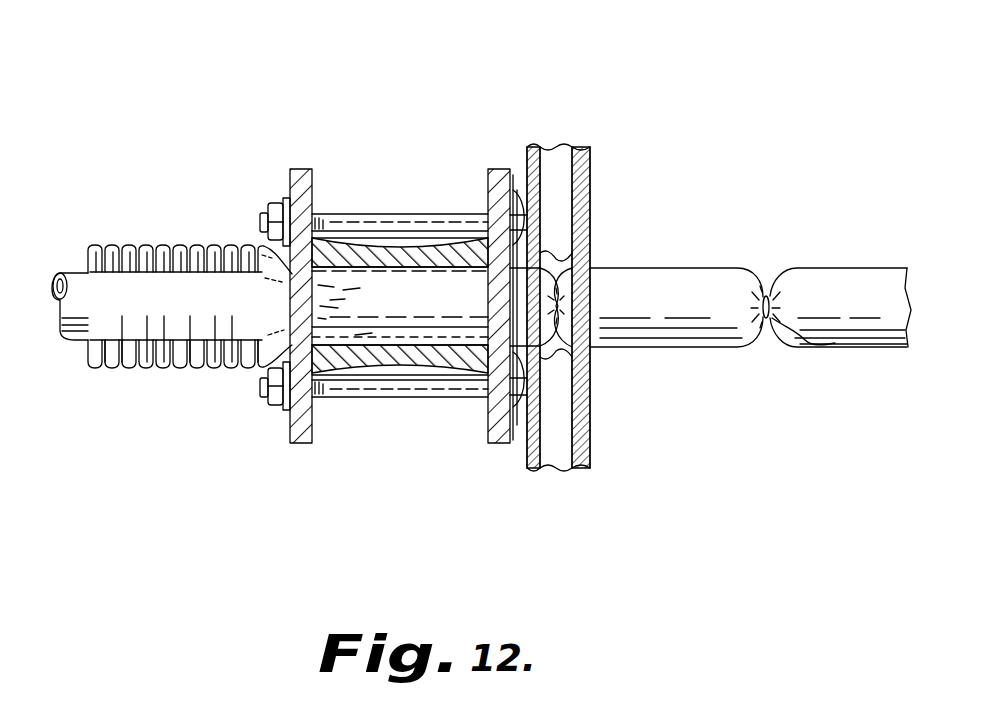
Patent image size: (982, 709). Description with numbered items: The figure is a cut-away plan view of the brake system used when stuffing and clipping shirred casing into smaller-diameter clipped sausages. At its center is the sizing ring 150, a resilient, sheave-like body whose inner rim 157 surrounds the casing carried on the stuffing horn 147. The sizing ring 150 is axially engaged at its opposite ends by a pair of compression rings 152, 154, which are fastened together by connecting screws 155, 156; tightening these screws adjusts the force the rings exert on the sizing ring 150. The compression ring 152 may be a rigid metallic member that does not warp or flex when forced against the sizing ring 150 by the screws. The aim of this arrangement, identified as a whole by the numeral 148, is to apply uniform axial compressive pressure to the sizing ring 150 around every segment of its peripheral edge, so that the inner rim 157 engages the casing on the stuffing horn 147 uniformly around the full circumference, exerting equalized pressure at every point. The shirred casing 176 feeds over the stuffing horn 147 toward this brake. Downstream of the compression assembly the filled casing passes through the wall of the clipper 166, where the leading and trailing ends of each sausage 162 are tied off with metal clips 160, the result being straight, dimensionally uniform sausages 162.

The stuffing horn 147 is at (72, 342).
The conduit coupling assembly 148 is at (417, 183).
The sizing ring 150 is at (427, 367).
The compression ring 152 is at (300, 169).
The compression ring 154 is at (497, 169).
The connecting screw 155 is at (358, 397).
The connecting screw 156 is at (362, 213).
The inner rim 157 is at (393, 268).
The metal clip 160 is at (562, 301).
The sausage 162 is at (652, 347).
The clipper 166 is at (575, 197).
The corrugated hose 176 is at (150, 248).